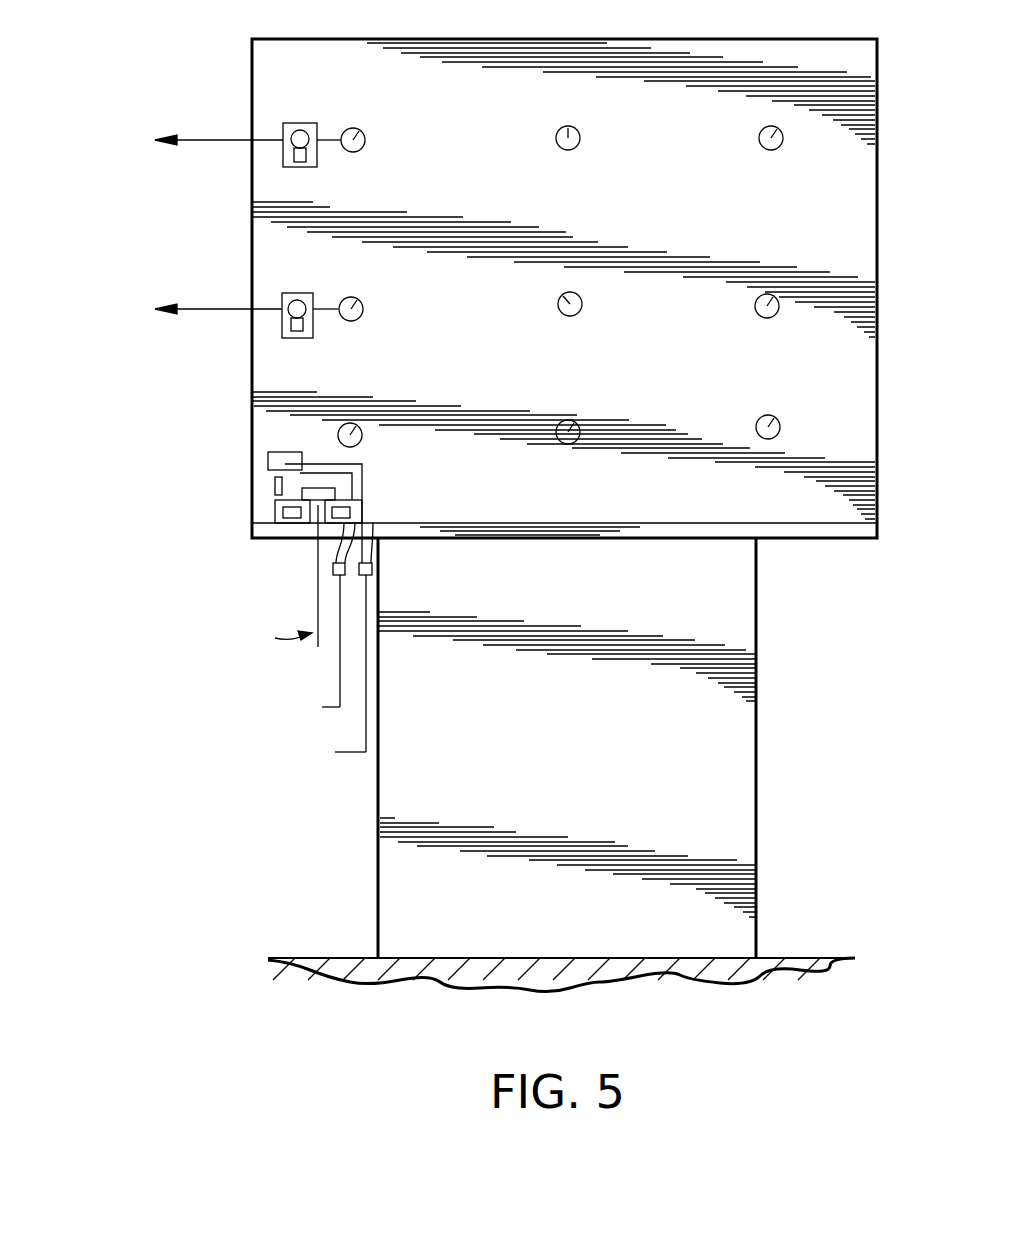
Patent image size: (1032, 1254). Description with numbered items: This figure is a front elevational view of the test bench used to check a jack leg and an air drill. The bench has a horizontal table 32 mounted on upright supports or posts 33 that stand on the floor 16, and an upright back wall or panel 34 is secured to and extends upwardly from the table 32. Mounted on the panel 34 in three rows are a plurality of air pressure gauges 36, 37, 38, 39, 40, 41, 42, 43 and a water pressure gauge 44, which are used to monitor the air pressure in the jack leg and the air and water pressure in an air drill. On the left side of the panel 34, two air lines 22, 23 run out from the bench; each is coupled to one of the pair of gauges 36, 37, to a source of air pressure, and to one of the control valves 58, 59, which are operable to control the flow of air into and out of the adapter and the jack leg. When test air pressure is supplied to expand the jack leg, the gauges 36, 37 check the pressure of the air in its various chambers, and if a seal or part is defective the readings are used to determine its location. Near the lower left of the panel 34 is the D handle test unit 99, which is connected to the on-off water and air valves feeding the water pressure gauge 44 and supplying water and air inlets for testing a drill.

The floor 16 is at (324, 958).
The air line 22 is at (200, 143).
The air line 23 is at (212, 312).
The horizontal table 32 is at (840, 525).
The upright supports or posts 33 is at (737, 785).
The upright back wall or panel 34 is at (862, 160).
The air pressure gauge 36 is at (362, 150).
The air pressure gauge 37 is at (356, 320).
The air pressure gauge 38 is at (359, 443).
The air pressure gauge 39 is at (577, 146).
The air pressure gauge 40 is at (574, 315).
The air pressure gauge 41 is at (572, 442).
The air pressure gauge 42 is at (778, 148).
The air pressure gauge 43 is at (770, 318).
The water pressure gauge 44 is at (773, 439).
The control valve 58 is at (300, 123).
The control valve 59 is at (302, 293).
The D handle test unit 99 is at (380, 503).